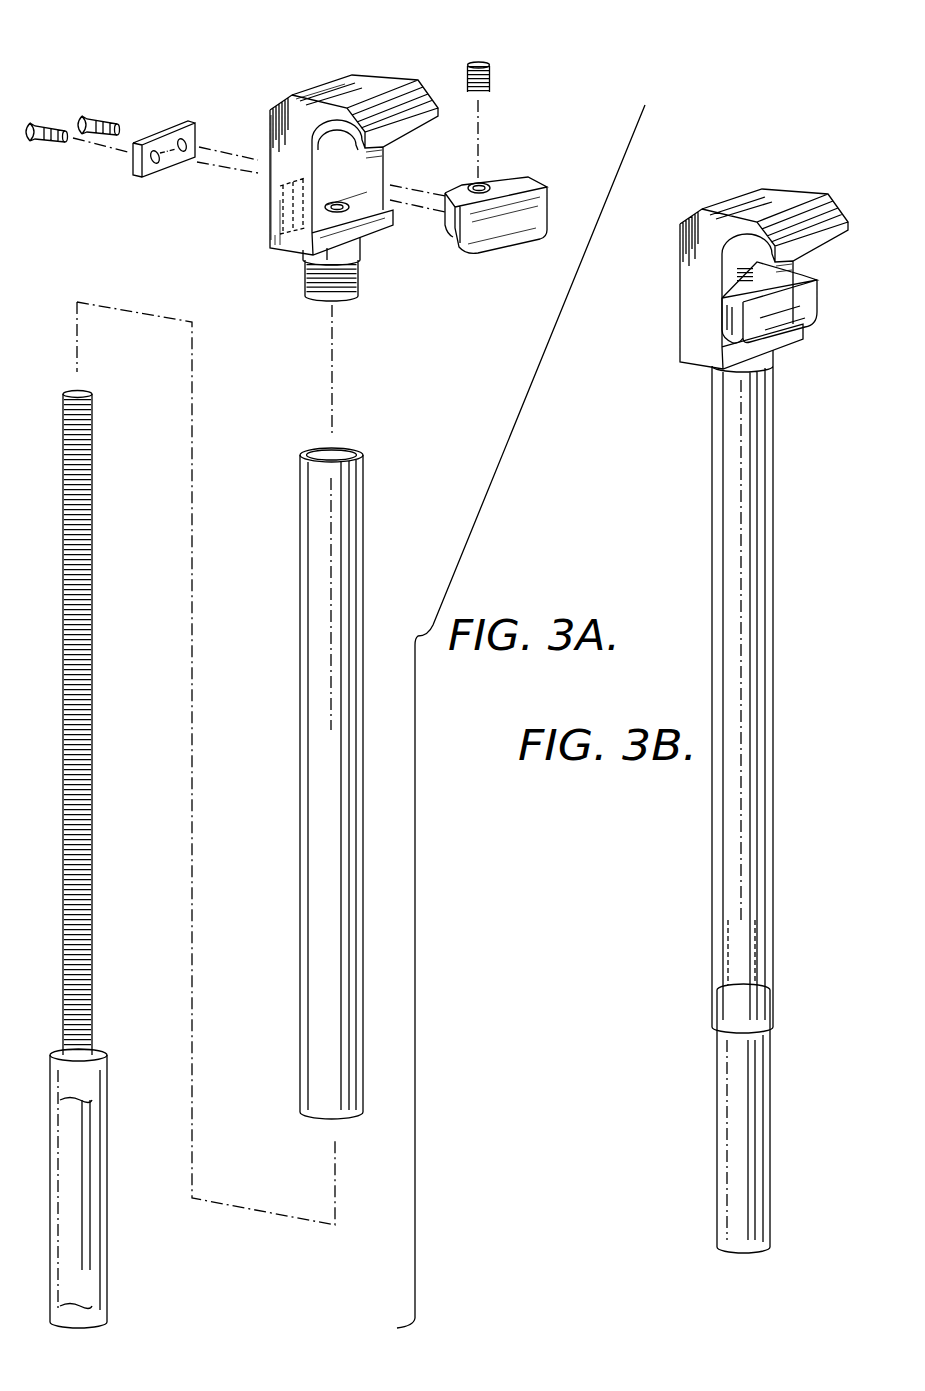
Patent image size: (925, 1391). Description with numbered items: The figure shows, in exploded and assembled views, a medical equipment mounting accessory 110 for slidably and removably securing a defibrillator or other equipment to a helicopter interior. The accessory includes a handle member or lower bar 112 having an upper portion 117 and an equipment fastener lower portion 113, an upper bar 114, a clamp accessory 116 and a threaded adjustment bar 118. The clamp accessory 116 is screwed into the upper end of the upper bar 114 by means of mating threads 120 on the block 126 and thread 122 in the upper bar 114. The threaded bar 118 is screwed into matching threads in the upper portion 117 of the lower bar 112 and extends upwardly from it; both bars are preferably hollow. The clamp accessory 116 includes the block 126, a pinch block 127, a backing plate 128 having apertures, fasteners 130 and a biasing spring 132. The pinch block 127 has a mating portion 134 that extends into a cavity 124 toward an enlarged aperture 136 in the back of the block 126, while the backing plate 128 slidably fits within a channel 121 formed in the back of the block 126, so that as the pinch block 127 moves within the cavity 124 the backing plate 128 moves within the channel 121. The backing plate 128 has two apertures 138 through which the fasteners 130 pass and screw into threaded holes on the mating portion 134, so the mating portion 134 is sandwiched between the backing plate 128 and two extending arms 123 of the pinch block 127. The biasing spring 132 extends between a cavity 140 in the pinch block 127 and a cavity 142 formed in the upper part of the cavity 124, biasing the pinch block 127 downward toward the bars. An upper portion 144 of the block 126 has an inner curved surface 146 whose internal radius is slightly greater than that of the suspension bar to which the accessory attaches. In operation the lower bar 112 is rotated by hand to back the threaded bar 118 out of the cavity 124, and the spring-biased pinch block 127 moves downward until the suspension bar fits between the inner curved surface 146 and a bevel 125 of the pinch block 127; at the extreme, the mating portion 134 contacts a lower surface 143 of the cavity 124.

In FIG. 3A, the medical equipment mounting accessory 110 is at (127, 61).
In FIG. 3B, the medical equipment mounting accessory 110 is at (662, 1029).
In FIG. 3A, the lower bar 112 is at (107, 1258).
In FIG. 3B, the lower bar 112 is at (717, 1187).
In FIG. 3A, the equipment fastener lower portion 113 is at (75, 1295).
In FIG. 3A, the upper bar 114 is at (302, 663).
In FIG. 3B, the upper bar 114 is at (773, 838).
In FIG. 3A, the clamp accessory 116 is at (378, 73).
In FIG. 3B, the clamp accessory 116 is at (737, 195).
In FIG. 3A, the upper portion 117 is at (75, 1089).
In FIG. 3A, the threaded adjustment bar 118 is at (93, 840).
In FIG. 3B, the threaded adjustment bar 118 is at (723, 963).
In FIG. 3A, the threads 120 is at (358, 277).
In FIG. 3A, the channel 121 is at (276, 197).
In FIG. 3A, the thread 122 is at (345, 455).
In FIG. 3A, the extending arms 123 is at (453, 237).
In FIG. 3A, the cavity 124 is at (352, 162).
In FIG. 3B, the cavity 124 is at (762, 279).
In FIG. 3B, the bevel 125 is at (755, 290).
In FIG. 3A, the block 126 is at (285, 237).
In FIG. 3A, the pinch block 127 is at (493, 240).
In FIG. 3A, the backing plate 128 is at (144, 176).
In FIG. 3A, the fasteners 130 is at (110, 118).
In FIG. 3A, the biasing spring 132 is at (490, 86).
In FIG. 3A, the mating portion 134 is at (488, 182).
In FIG. 3A, the enlarged aperture 136 is at (335, 177).
In FIG. 3A, the apertures 138 is at (156, 157).
In FIG. 3A, the cavity 140 is at (488, 182).
In FIG. 3A, the cavity 142 is at (270, 108).
In FIG. 3A, the lower surface 143 is at (342, 208).
In FIG. 3A, the upper portion 144 is at (310, 108).
In FIG. 3A, the inner curved surface 146 is at (365, 140).